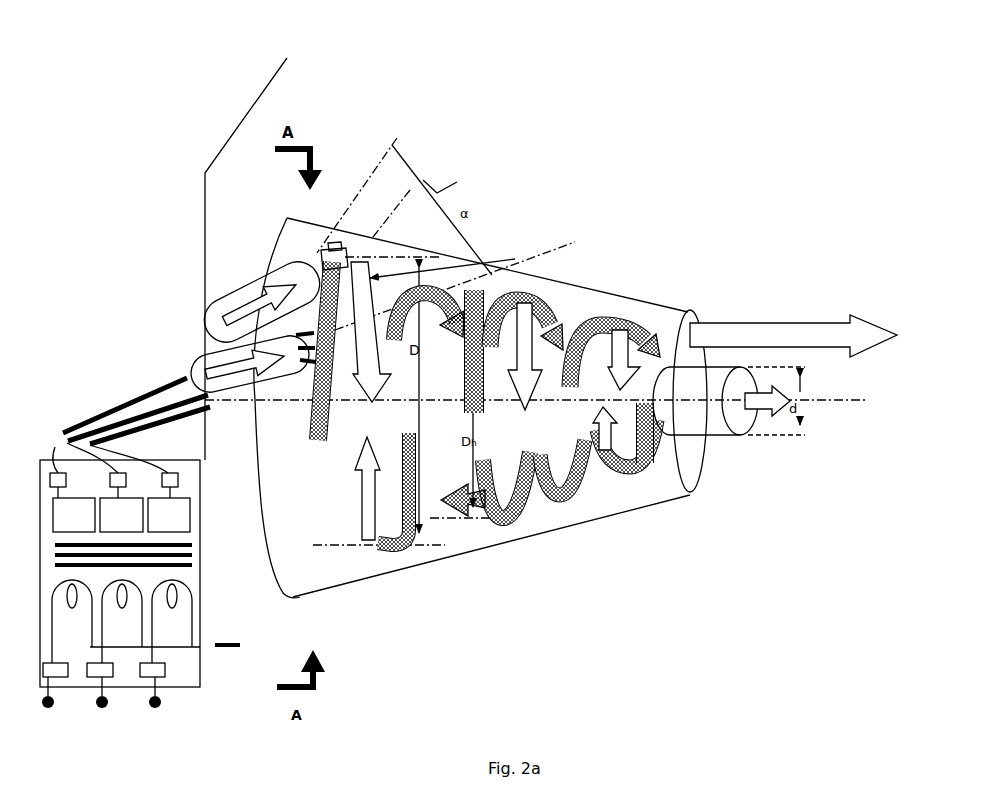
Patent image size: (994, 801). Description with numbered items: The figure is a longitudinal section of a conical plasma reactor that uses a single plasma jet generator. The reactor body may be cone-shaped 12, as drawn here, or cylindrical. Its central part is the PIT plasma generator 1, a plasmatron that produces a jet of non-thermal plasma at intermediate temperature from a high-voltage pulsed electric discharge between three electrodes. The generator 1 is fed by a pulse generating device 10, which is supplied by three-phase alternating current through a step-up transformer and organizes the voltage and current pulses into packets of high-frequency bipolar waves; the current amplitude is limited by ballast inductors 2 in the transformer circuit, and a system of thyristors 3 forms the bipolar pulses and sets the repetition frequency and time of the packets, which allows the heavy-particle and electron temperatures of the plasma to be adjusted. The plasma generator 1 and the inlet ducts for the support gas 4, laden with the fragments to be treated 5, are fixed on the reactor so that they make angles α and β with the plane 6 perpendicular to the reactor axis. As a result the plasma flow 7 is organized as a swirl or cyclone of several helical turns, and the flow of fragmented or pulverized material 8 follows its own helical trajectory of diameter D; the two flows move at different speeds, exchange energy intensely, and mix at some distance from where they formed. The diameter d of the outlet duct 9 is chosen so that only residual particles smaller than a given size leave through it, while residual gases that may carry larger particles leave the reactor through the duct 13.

The plasma generator 1 is at (210, 362).
The inductor 2 is at (174, 677).
The thyristor system 3 is at (184, 477).
The support gas flow 4 is at (220, 305).
The fragments to be treated 5 is at (316, 257).
The plane perpendicular to the reactor axis 6 is at (203, 162).
The plasma jet 7 is at (570, 314).
The flow of fragmented material 8 is at (515, 259).
The outlet duct 9 is at (718, 446).
The pulse generating device 10 is at (126, 696).
The cone-shaped reactor 12 is at (620, 524).
The residual gas duct 13 is at (811, 320).